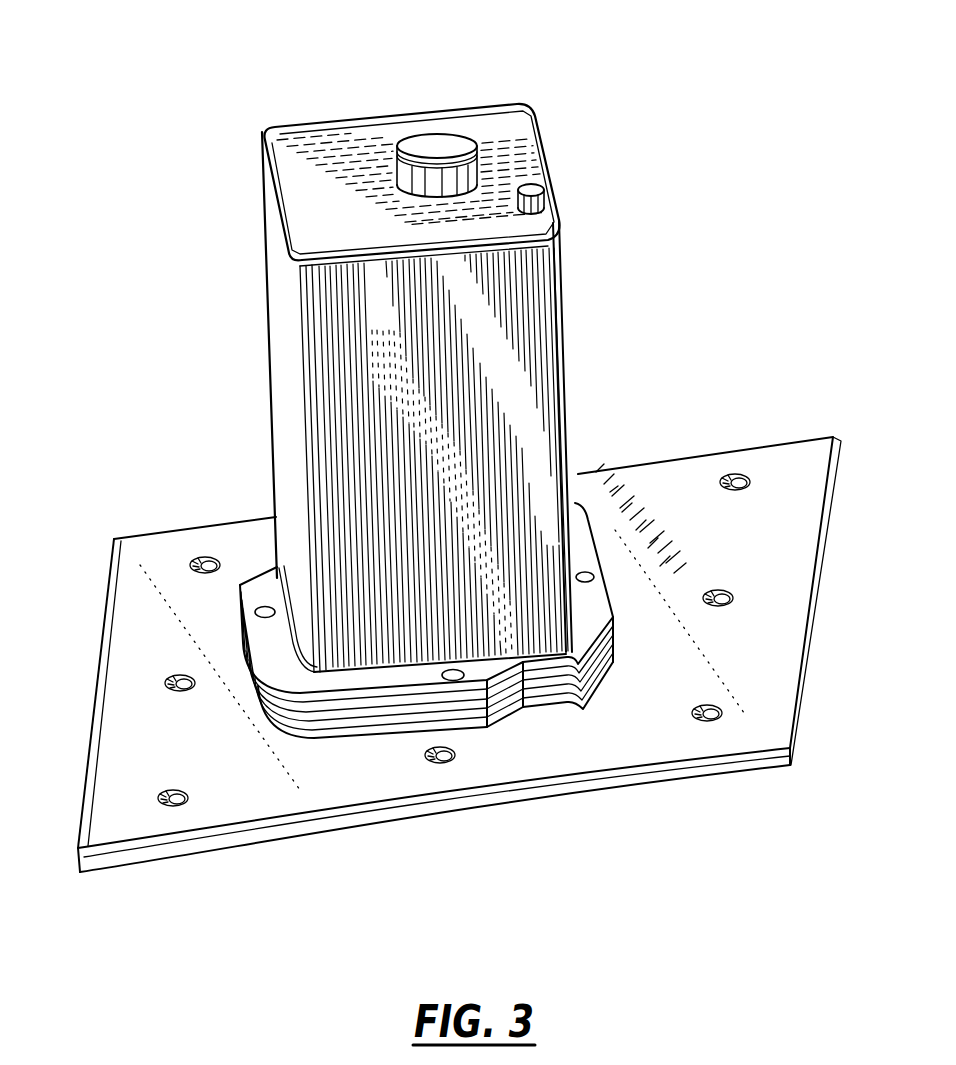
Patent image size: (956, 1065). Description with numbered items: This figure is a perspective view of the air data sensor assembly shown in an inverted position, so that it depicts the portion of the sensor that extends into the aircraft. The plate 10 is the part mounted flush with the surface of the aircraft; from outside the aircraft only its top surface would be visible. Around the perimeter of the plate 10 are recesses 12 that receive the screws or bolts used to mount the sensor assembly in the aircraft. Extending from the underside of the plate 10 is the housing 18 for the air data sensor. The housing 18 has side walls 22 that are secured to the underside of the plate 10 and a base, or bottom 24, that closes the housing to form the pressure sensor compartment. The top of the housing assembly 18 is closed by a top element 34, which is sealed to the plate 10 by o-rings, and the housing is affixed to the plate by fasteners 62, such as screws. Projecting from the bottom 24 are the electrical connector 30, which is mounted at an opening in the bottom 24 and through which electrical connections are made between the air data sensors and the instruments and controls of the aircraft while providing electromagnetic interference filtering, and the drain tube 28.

The plate 10 is at (545, 792).
The recesses 12 is at (713, 719).
The housing 18 is at (429, 352).
The side walls 22 is at (272, 331).
The base (bottom) 24 is at (316, 152).
The drain tube 28 is at (533, 194).
The connector 30 is at (445, 150).
The top element 34 is at (245, 648).
The fasteners 62 is at (265, 607).